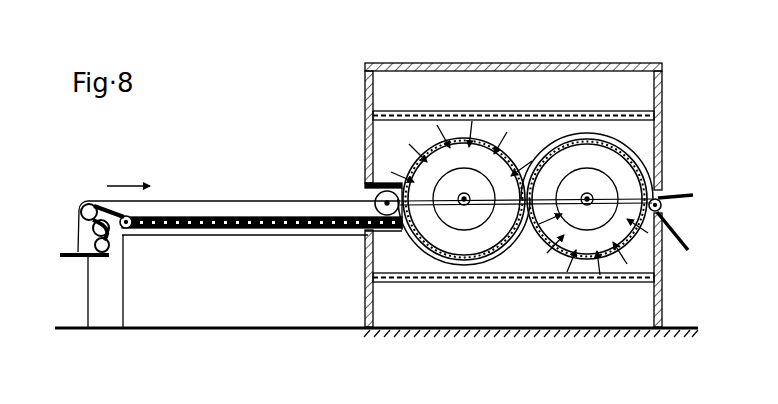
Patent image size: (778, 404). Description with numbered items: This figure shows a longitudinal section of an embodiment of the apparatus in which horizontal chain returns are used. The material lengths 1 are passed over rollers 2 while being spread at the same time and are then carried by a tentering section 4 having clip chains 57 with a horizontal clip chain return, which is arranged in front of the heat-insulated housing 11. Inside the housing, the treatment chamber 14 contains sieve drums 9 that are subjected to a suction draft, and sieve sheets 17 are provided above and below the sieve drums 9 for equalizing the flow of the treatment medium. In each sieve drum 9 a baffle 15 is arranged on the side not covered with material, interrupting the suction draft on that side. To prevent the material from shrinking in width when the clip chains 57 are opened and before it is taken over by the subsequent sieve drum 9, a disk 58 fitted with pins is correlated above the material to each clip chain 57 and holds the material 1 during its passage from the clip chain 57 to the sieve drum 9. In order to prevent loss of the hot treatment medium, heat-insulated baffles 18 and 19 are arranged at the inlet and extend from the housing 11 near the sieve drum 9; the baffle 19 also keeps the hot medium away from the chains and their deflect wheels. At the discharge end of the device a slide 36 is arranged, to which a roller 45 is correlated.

The material lengths 1 is at (68, 258).
The rollers 2 is at (82, 226).
The tentering section 4 is at (125, 237).
The sieve drums 9 is at (584, 139).
The heat-insulated housing 11 is at (480, 63).
The treatment chamber 14 is at (662, 122).
The baffle 15 is at (433, 249).
The sieve sheets 17 is at (517, 111).
The heat-insulated baffle 18 is at (388, 183).
The heat-insulated baffle 19 is at (396, 233).
The slide 36 is at (678, 244).
The roller 45 is at (662, 207).
The clip chains 57 is at (246, 217).
The disk 58 is at (376, 203).